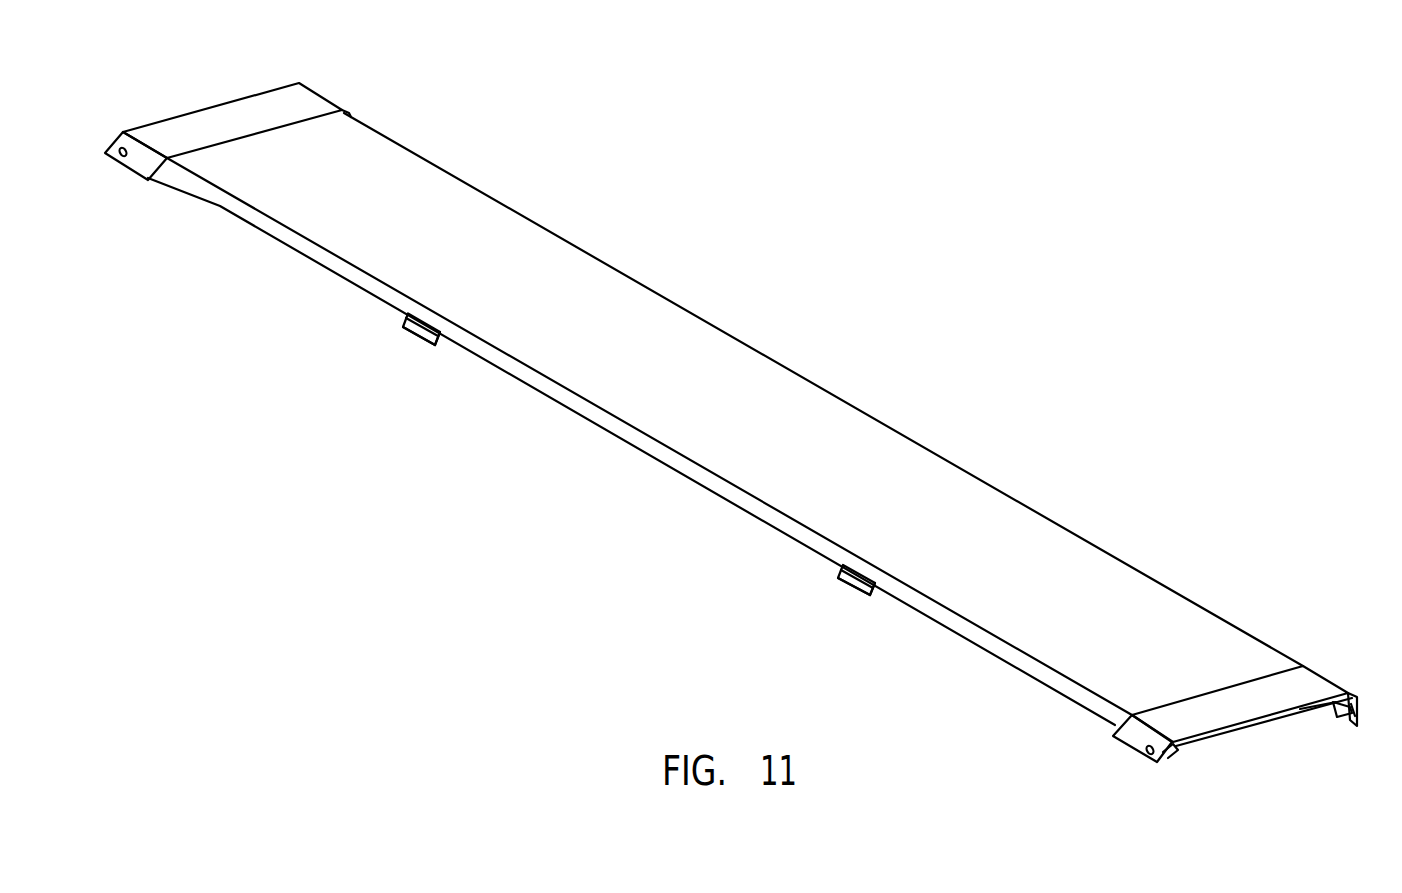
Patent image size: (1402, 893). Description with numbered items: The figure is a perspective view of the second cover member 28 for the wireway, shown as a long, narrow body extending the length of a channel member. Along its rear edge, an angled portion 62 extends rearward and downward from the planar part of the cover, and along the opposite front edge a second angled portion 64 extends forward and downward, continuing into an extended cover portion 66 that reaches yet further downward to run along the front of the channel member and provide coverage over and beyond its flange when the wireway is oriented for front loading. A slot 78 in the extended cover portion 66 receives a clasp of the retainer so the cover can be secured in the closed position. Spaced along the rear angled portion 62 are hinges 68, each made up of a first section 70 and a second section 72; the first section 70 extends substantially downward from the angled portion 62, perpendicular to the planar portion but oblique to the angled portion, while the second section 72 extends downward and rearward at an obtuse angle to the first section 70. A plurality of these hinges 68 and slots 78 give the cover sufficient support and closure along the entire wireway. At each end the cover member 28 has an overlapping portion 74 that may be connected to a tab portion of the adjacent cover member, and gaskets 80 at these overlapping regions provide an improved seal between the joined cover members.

The cover member 28 is at (812, 318).
The angled portion 62 is at (636, 431).
The second angled portion 64 is at (1350, 690).
The extended cover portion 66 is at (1359, 710).
The hinge 68 is at (440, 353).
The first section 70 is at (405, 316).
The second section 72 is at (420, 340).
The overlapping portion 74 is at (226, 108).
The slot 78 is at (1336, 714).
The gasket 80 is at (158, 121).